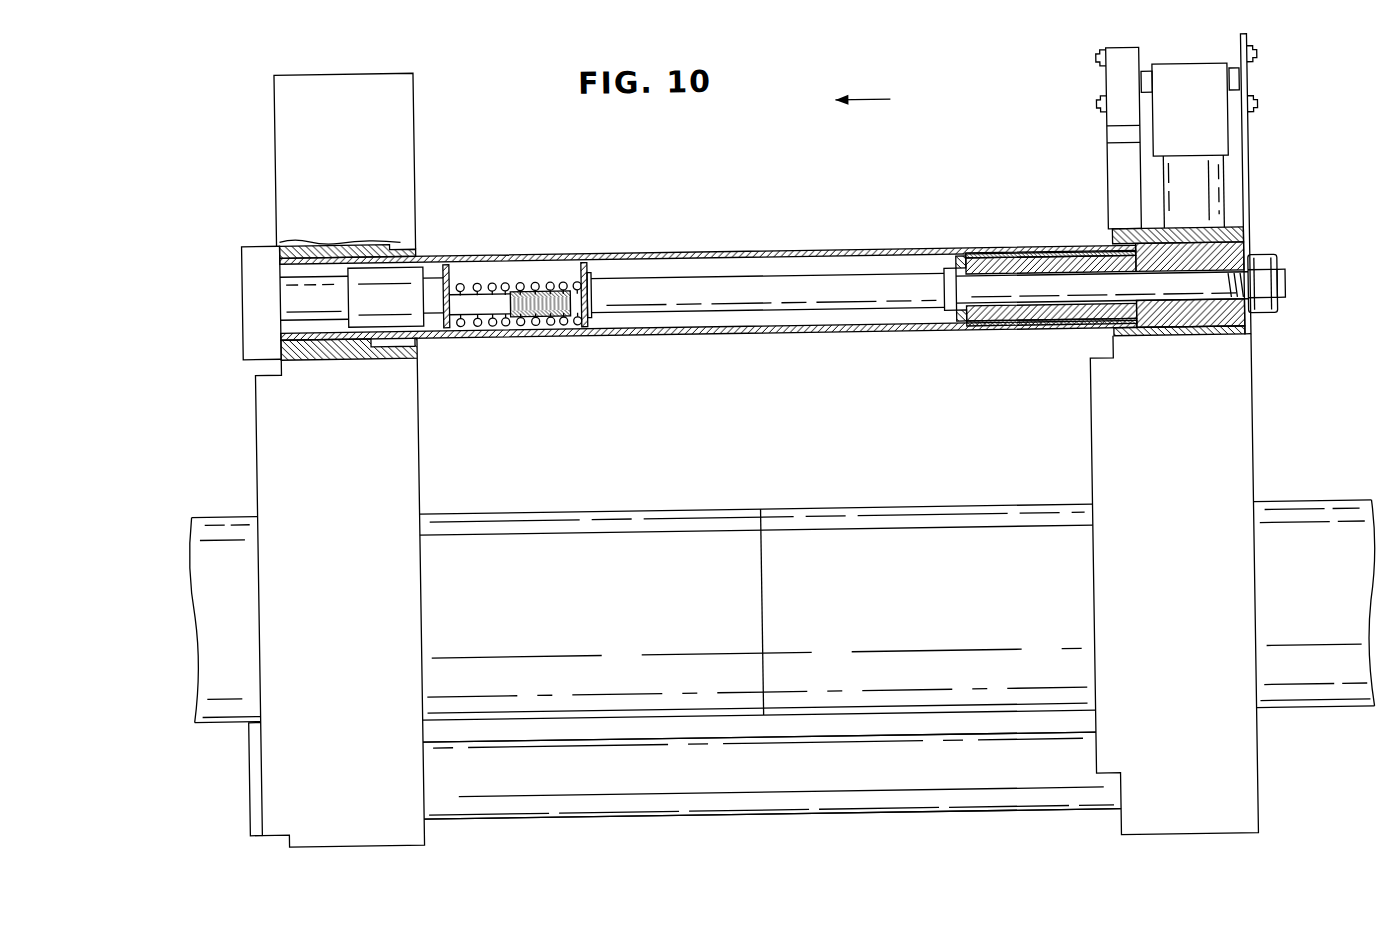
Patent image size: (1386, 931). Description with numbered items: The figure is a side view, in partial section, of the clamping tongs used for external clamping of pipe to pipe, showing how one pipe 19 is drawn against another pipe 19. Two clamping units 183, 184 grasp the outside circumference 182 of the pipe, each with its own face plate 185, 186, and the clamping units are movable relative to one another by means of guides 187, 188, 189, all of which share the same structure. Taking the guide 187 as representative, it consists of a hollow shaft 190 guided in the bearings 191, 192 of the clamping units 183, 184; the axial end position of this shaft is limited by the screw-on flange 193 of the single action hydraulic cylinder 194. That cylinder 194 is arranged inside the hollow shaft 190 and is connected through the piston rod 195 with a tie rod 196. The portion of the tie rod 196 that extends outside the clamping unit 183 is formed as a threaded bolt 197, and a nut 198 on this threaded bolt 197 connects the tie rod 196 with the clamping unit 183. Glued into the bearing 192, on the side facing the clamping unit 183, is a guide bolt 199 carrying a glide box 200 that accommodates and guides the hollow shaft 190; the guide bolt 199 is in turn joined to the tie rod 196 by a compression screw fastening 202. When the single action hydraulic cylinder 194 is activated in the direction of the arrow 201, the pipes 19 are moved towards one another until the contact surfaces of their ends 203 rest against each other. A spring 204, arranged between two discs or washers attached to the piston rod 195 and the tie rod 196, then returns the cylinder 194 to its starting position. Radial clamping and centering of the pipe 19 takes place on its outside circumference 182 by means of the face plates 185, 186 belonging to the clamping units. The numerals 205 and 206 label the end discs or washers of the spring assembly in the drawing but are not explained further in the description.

The pipe 19 is at (508, 525).
The outside circumference 182 is at (645, 521).
The clamping unit 183 is at (1244, 245).
The clamping unit 184 is at (401, 146).
The face plate 185 is at (395, 515).
The face plate 186 is at (1093, 496).
The guide 187 is at (694, 254).
The guide 188 is at (464, 761).
The guide 189 is at (772, 775).
The hollow shaft 190 is at (899, 253).
The bearing 191 is at (409, 244).
The bearing 192 is at (1124, 241).
The screw-on flange 193 is at (259, 255).
The single action hydraulic cylinder 194 is at (306, 284).
The piston rod 195 is at (480, 297).
The tie rod 196 is at (729, 290).
The threaded bolt 197 is at (1289, 283).
The nut 198 is at (1276, 266).
The guide bolt 199 is at (1249, 330).
The glide box 200 is at (1012, 265).
The arrow 201 is at (892, 101).
The compression screw fastening 202 is at (966, 261).
The ends 203 is at (765, 551).
The spring 204 is at (541, 310).
The flange 205 is at (457, 264).
The flange 206 is at (594, 258).